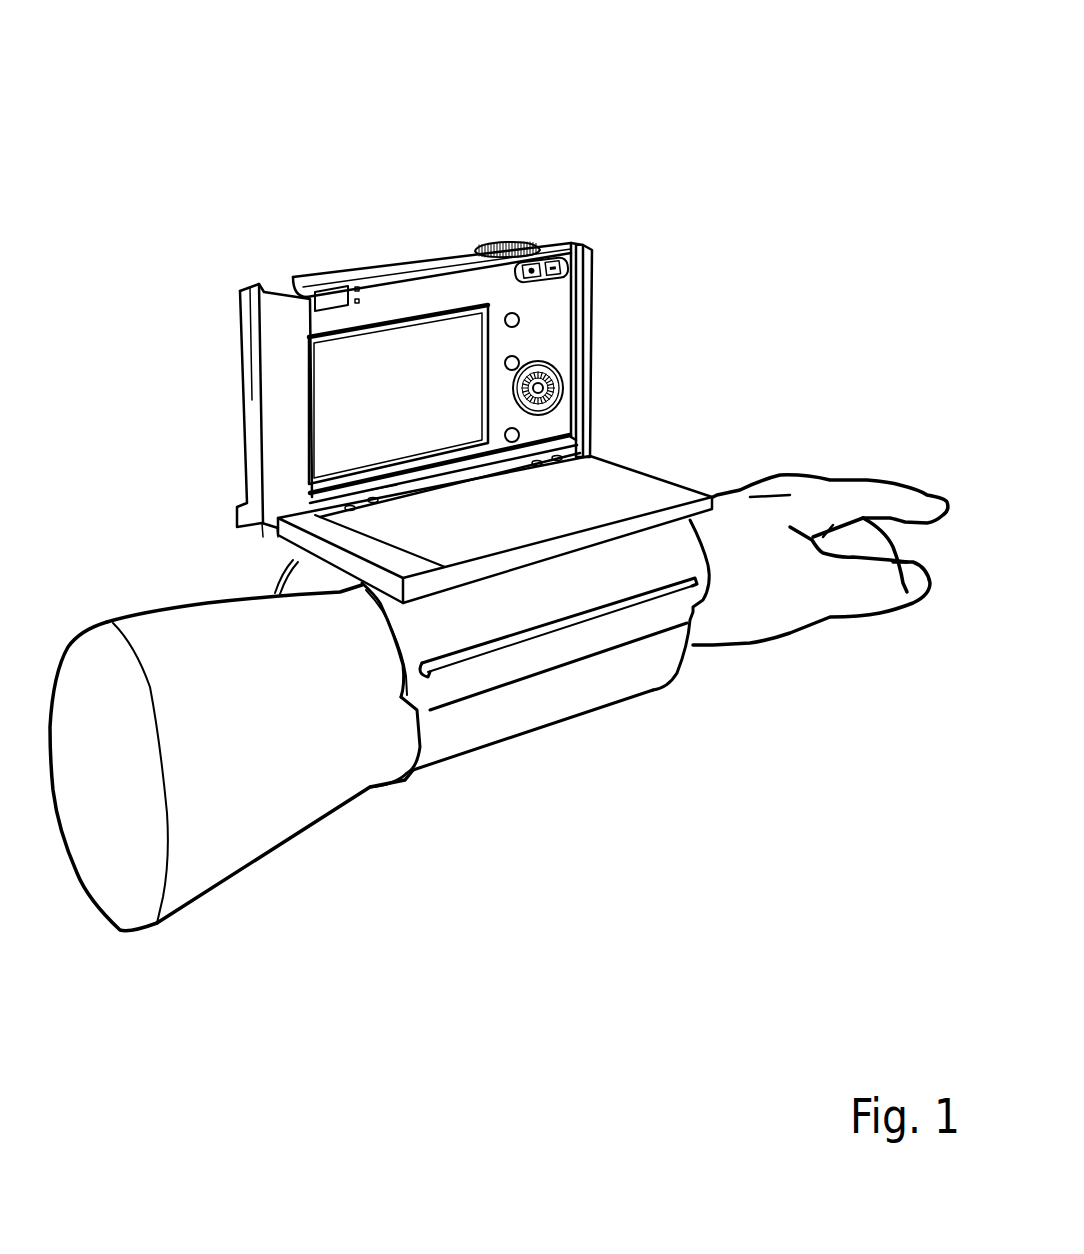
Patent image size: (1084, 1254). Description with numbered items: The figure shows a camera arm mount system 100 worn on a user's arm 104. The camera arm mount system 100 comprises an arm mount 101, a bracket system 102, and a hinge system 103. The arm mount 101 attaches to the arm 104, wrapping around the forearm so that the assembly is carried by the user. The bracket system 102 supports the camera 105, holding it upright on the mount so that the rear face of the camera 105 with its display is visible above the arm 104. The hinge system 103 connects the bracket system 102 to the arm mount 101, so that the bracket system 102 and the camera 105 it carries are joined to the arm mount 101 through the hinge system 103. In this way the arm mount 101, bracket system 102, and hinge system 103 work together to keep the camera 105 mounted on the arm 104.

The camera arm mount system 100 is at (688, 172).
The arm mount 101 is at (673, 483).
The bracket system 102 is at (263, 373).
The hinge system 103 is at (583, 418).
The arm 104 is at (230, 762).
The camera 105 is at (383, 273).